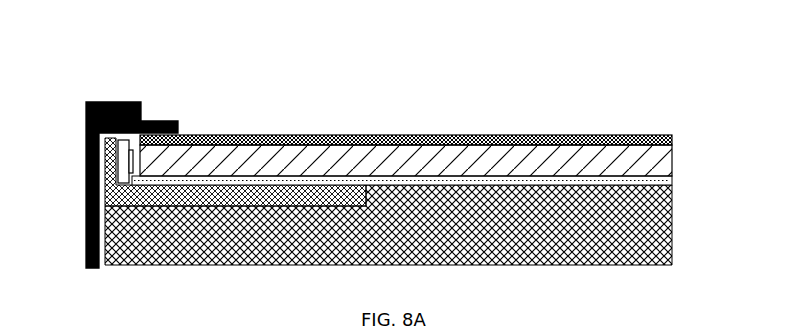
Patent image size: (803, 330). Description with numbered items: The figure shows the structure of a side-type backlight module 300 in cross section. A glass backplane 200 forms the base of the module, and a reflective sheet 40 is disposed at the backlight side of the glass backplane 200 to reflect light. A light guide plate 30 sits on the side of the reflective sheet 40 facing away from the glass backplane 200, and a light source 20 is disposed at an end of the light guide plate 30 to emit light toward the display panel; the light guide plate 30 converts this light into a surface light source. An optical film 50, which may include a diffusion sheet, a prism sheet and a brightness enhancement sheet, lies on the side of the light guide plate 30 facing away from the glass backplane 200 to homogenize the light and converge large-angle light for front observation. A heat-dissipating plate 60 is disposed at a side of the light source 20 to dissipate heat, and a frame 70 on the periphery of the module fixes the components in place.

The side-type backlight module 300 is at (645, 57).
The light source 20 is at (112, 154).
The light guide plate 30 is at (653, 150).
The reflective sheet 40 is at (665, 174).
The optical film 50 is at (664, 130).
The heat-dissipating plate 60 is at (232, 183).
The frame 70 is at (79, 211).
The glass backplane 200 is at (656, 228).